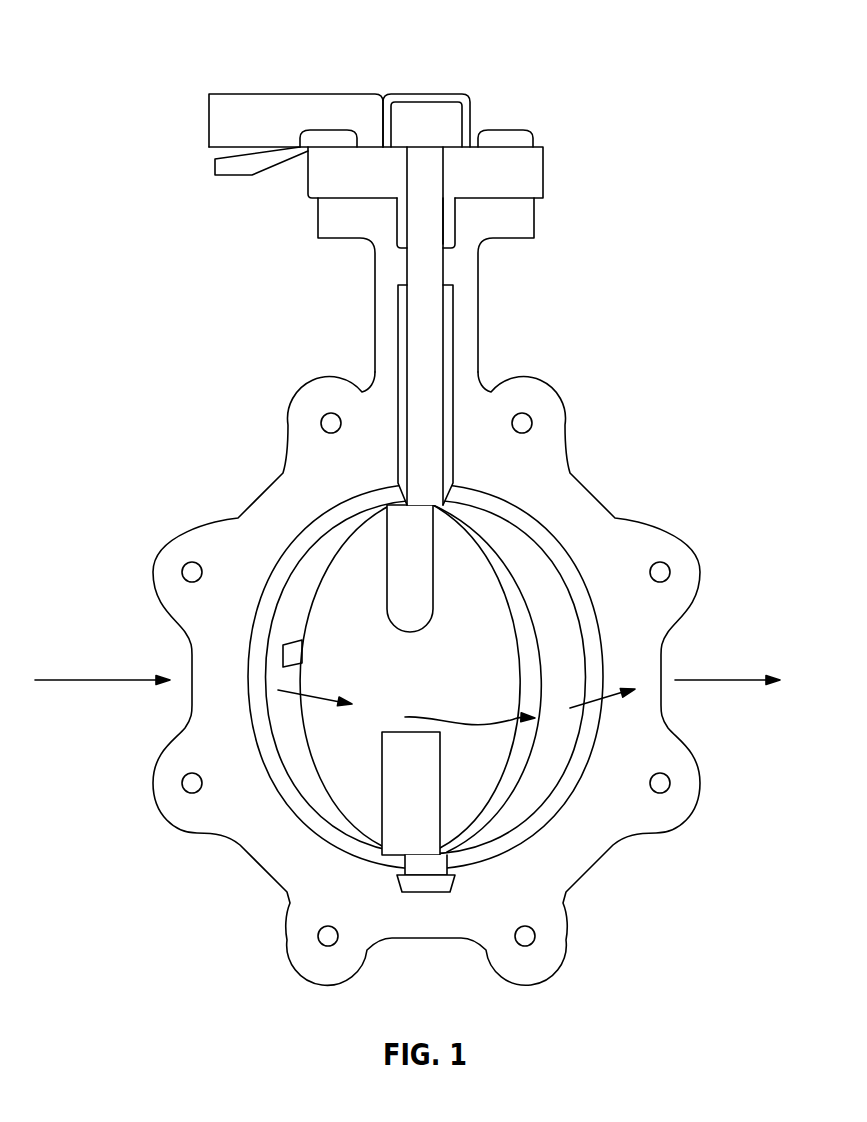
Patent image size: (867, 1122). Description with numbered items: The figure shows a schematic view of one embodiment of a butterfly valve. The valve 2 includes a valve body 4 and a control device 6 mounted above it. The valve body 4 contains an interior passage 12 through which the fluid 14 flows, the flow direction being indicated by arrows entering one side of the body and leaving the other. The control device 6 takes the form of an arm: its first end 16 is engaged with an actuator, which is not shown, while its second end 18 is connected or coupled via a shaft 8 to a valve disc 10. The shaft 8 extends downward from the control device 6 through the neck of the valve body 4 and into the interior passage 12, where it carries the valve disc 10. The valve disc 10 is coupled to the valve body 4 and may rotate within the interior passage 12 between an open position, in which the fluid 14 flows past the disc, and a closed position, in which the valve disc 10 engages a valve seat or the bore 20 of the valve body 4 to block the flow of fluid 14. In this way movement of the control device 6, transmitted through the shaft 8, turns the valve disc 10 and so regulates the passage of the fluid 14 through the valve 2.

The valve 2 is at (592, 308).
The valve body 4 is at (562, 518).
The control device 6 is at (286, 76).
The shaft 8 is at (420, 303).
The valve disc 10 is at (353, 640).
The interior passage 12 is at (557, 640).
The fluid 14 is at (116, 672).
The first end 16 is at (209, 121).
The second end 18 is at (427, 94).
The bore 20 is at (547, 803).